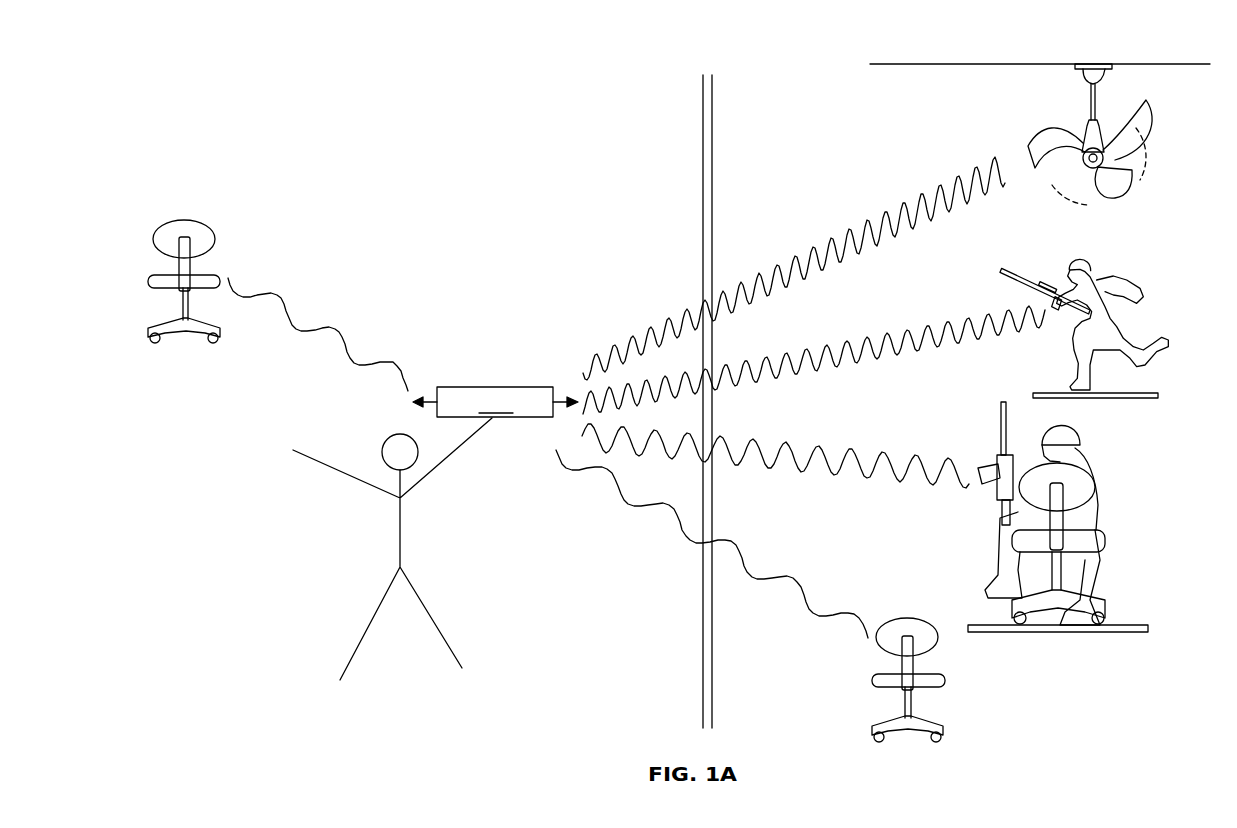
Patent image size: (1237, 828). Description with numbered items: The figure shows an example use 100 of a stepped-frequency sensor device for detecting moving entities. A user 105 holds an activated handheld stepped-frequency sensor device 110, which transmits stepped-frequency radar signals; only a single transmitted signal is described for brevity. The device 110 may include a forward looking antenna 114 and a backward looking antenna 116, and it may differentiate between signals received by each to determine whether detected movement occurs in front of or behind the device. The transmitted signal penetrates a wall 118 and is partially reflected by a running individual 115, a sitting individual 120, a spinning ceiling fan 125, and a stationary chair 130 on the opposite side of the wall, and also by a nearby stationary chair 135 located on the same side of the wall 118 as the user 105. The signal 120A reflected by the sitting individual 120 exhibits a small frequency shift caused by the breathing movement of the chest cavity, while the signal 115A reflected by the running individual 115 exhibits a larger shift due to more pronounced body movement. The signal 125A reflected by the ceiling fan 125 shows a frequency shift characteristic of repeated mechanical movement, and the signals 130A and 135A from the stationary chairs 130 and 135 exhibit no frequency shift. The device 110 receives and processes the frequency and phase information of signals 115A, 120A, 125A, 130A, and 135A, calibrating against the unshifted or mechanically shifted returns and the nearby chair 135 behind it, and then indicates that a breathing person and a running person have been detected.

The example use 100 is at (350, 56).
The user 105 is at (400, 537).
The handheld stepped-frequency sensor device 110 is at (495, 402).
The forward looking antenna 114 is at (556, 400).
The backward looking antenna 116 is at (434, 400).
The wall 118 is at (703, 183).
The running individual 115 is at (1081, 257).
The signal reflected by the running individual 115A is at (872, 338).
The sitting individual 120 is at (1066, 428).
The signal reflected by the sitting individual 120A is at (815, 446).
The spinning ceiling fan 125 is at (1053, 130).
The signal reflected by the spinning ceiling fan 125A is at (860, 226).
The stationary chair 130 is at (945, 679).
The signal reflected by the stationary chair 130A is at (792, 574).
The nearby stationary chair 135 is at (184, 220).
The signal reflected by the nearby stationary chair 135A is at (285, 290).